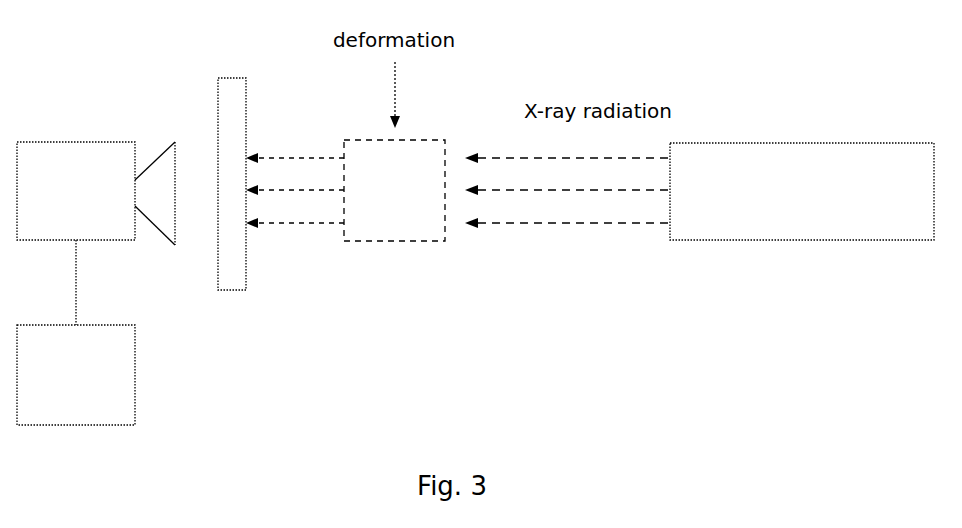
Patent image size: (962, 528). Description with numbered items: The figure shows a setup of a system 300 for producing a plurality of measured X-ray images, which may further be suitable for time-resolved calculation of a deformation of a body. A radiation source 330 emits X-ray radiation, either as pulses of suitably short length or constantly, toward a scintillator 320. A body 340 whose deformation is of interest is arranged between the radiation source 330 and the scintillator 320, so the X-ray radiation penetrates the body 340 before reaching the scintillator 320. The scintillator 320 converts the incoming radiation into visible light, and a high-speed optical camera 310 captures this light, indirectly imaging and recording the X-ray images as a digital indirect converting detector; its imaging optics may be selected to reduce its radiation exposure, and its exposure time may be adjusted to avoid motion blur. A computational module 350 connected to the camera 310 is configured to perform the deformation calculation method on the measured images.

The system 300 is at (713, 350).
The high-speed optical camera 310 is at (82, 241).
The scintillator 320 is at (248, 231).
The radiation source 330 is at (712, 241).
The body 340 is at (447, 231).
The computational module 350 is at (82, 426).